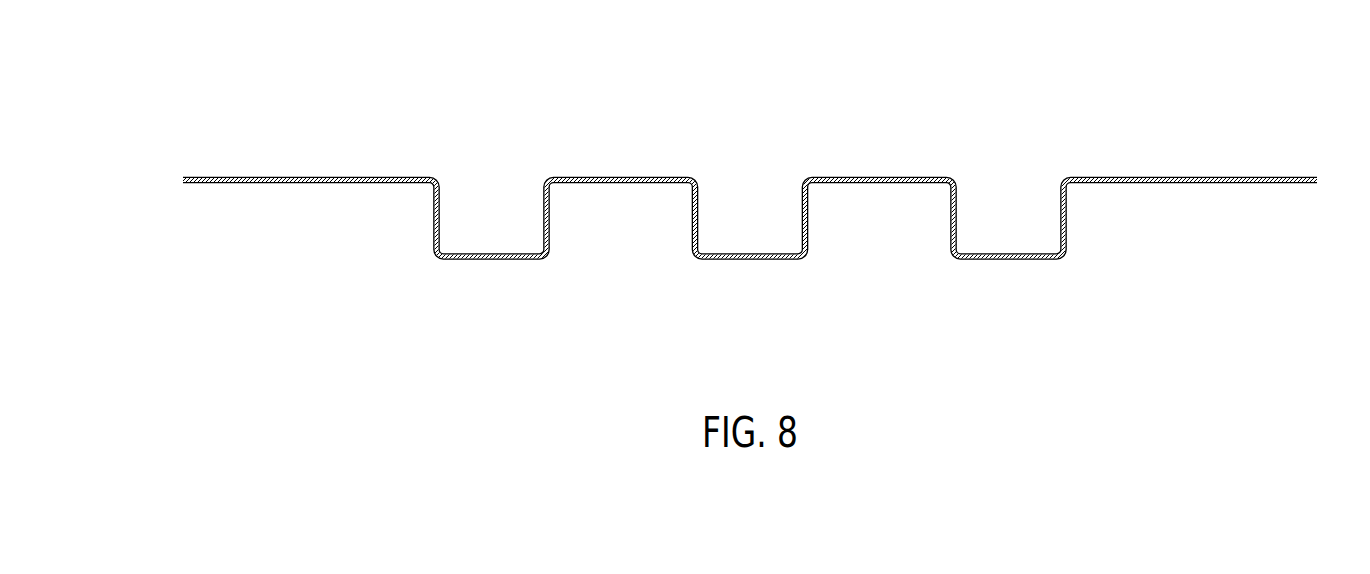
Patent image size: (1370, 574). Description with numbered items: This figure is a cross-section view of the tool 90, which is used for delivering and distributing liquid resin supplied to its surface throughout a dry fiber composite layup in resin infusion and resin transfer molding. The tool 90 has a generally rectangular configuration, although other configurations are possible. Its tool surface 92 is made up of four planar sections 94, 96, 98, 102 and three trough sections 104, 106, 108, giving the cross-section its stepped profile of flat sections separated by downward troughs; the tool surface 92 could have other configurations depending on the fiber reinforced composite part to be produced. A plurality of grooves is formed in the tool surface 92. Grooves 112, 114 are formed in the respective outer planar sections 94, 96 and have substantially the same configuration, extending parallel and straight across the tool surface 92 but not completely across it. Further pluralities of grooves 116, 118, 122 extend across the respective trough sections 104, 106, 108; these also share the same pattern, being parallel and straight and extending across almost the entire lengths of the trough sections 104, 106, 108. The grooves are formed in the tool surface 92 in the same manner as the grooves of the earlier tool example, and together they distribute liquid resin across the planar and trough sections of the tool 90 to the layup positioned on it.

The tool 90 is at (1080, 110).
The tool surface 92 is at (1216, 168).
The planar section 94 is at (223, 177).
The planar section 96 is at (1278, 177).
The planar section 98 is at (622, 177).
The planar section 102 is at (878, 177).
The trough section 104 is at (452, 253).
The trough section 106 is at (708, 253).
The trough section 108 is at (968, 253).
The grooves 112 is at (326, 168).
The grooves 114 is at (1181, 168).
The grooves 116 is at (496, 244).
The grooves 118 is at (754, 244).
The grooves 122 is at (1012, 244).